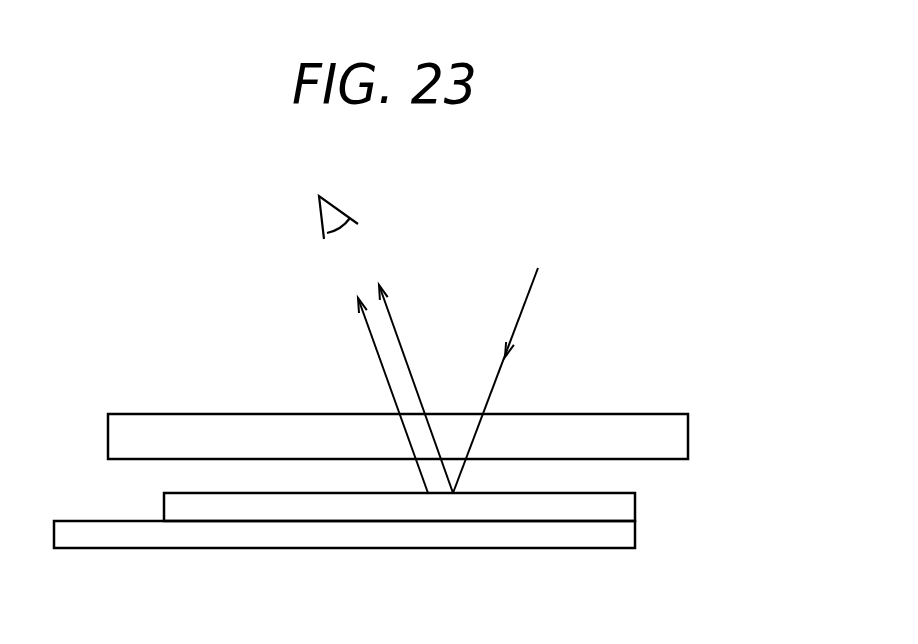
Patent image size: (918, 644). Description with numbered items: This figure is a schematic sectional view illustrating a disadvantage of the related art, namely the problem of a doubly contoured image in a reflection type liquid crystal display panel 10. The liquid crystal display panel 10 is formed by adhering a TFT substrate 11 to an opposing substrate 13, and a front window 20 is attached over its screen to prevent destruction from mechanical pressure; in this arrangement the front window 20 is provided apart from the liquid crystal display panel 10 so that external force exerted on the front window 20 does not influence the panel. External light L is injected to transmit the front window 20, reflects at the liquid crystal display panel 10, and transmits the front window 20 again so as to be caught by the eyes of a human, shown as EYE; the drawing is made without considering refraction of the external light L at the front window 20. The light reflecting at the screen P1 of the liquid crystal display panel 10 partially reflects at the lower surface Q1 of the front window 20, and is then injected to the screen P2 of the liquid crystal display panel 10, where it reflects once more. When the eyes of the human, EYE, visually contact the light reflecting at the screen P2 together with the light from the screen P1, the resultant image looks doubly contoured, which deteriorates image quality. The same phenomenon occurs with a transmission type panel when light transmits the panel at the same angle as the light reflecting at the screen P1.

The liquid crystal display panel 10 is at (411, 520).
The TFT substrate 11 is at (388, 538).
The opposing substrate 13 is at (637, 508).
The front window 20 is at (637, 414).
The external light L is at (501, 363).
The eyes of a human EYE is at (337, 204).
The lower surface of the front window Q1 is at (455, 436).
The screen of the liquid crystal display panel P1 is at (459, 509).
The screen of the liquid crystal display panel P2 is at (424, 509).